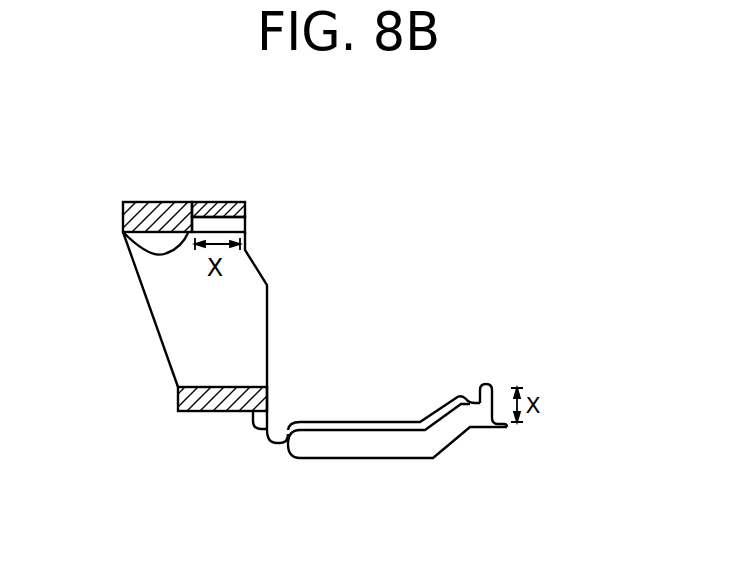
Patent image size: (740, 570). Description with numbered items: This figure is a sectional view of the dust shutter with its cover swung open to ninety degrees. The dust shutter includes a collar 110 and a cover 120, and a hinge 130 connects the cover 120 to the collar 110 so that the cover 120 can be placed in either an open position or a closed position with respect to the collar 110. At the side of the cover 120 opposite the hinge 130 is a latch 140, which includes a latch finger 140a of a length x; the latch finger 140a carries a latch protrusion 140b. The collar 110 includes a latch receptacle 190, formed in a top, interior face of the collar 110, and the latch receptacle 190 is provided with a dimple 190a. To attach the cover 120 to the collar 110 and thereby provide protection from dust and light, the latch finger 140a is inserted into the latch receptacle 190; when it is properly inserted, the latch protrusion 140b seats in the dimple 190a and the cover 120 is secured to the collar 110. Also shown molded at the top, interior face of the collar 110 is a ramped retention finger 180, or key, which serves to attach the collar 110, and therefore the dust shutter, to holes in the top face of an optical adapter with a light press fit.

The collar 110 is at (214, 426).
The cover 120 is at (428, 442).
The hinge 130 is at (290, 408).
The latch 140 is at (516, 439).
The latch finger 140a is at (485, 384).
The latch protrusion 140b is at (497, 392).
The ramped retention finger 180 is at (172, 242).
The latch receptacle 190 is at (245, 221).
The dimple 190a is at (205, 213).